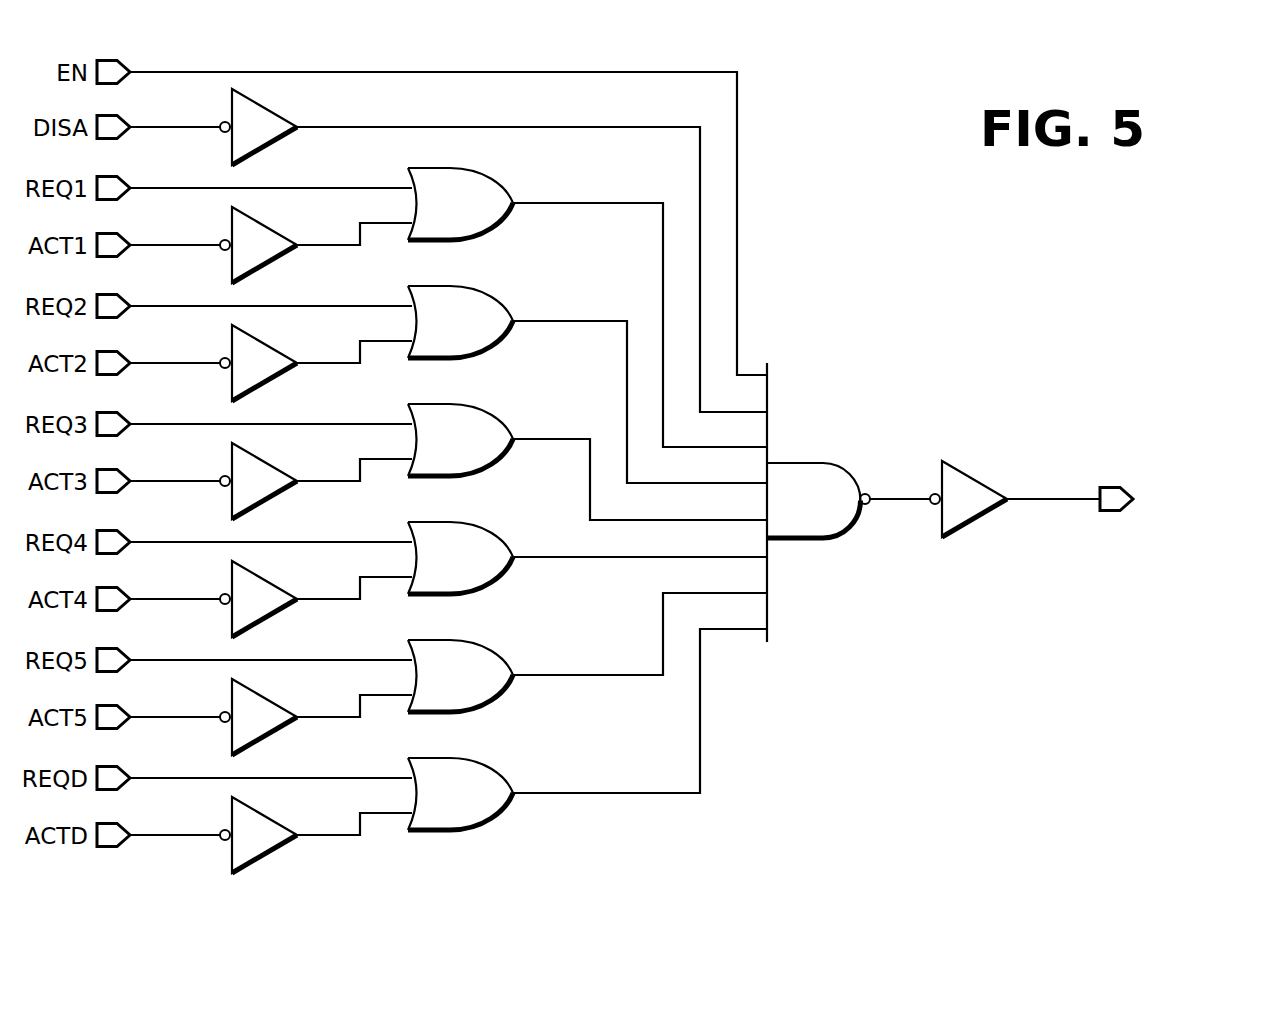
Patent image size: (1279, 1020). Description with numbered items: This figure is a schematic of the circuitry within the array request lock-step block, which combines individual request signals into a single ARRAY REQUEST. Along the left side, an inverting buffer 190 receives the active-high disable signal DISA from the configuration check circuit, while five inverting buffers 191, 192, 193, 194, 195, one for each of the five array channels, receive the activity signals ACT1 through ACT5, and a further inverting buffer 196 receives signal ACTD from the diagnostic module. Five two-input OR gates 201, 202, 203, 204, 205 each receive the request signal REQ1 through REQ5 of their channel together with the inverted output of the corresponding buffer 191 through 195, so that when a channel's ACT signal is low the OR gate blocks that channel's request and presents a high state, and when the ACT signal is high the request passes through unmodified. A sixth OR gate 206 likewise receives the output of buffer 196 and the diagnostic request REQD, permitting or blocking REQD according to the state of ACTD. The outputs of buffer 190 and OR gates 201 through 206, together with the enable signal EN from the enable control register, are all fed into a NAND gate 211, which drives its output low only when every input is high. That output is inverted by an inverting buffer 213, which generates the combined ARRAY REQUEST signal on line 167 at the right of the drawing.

The inverting buffer 190 is at (232, 147).
The inverting buffer 191 is at (232, 265).
The inverting buffer 192 is at (232, 383).
The inverting buffer 193 is at (232, 501).
The inverting buffer 194 is at (232, 619).
The inverting buffer 195 is at (232, 737).
The inverting buffer 196 is at (232, 855).
The two-input OR gate 201 is at (423, 245).
The two-input OR gate 202 is at (423, 363).
The two-input OR gate 203 is at (423, 481).
The two-input OR gate 204 is at (423, 599).
The two-input OR gate 205 is at (423, 717).
The sixth OR gate 206 is at (423, 835).
The NAND gate 211 is at (808, 462).
The inverting buffer 213 is at (970, 473).
The line 167 is at (1050, 500).